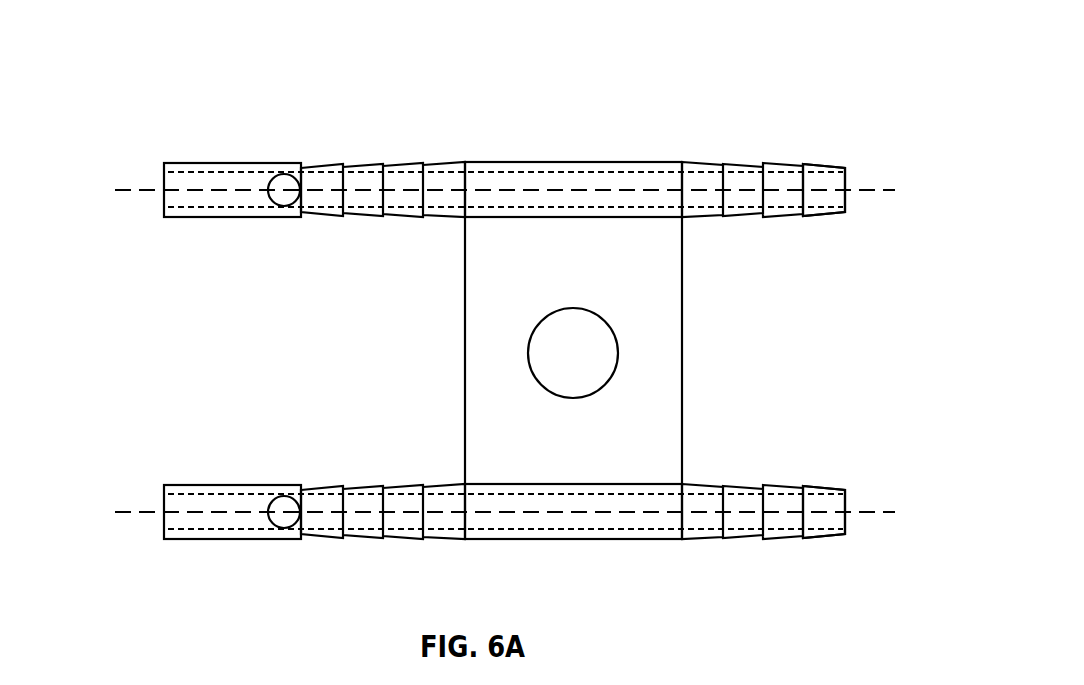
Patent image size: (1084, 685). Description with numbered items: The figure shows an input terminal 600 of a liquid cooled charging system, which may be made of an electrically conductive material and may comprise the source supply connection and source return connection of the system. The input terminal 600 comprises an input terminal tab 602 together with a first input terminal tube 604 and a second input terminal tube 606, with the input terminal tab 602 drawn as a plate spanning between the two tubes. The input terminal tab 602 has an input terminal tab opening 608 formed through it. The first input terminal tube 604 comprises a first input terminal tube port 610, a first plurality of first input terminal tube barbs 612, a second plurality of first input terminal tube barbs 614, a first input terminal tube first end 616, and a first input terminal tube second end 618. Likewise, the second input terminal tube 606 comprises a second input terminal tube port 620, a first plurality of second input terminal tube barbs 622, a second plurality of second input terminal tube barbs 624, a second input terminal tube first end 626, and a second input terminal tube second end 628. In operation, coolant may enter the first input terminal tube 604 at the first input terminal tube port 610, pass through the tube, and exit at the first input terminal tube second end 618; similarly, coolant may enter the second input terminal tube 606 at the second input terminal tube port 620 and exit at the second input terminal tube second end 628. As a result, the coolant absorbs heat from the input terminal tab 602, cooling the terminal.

The input terminal 600 is at (147, 44).
The input terminal tab 602 is at (667, 268).
The first input terminal tube 604 is at (588, 522).
The second input terminal tube 606 is at (578, 178).
The input terminal tab opening 608 is at (588, 338).
The first input terminal tube port 610 is at (283, 520).
The first plurality of first input terminal tube barbs 612 is at (356, 472).
The second plurality of first input terminal tube barbs 614 is at (746, 478).
The first input terminal tube first end 616 is at (150, 498).
The first input terminal tube second end 618 is at (855, 498).
The second input terminal tube port 620 is at (285, 177).
The first plurality of second input terminal tube barbs 622 is at (356, 152).
The second plurality of second input terminal tube barbs 624 is at (743, 158).
The second input terminal tube first end 626 is at (150, 174).
The second input terminal tube second end 628 is at (860, 172).